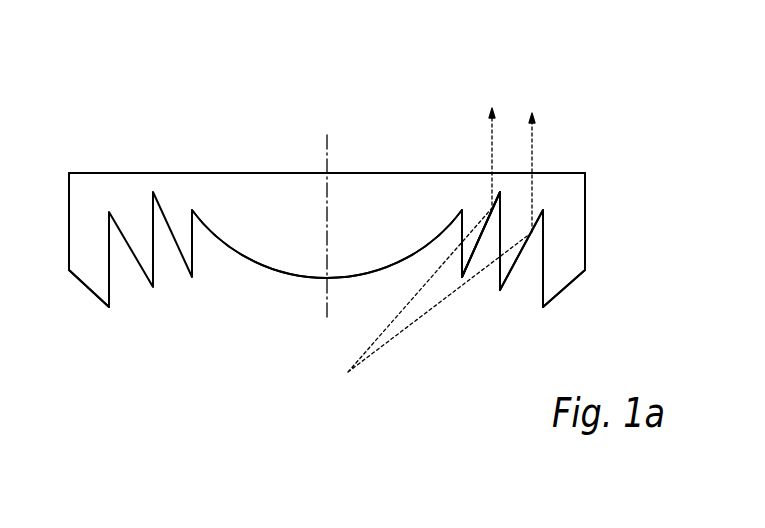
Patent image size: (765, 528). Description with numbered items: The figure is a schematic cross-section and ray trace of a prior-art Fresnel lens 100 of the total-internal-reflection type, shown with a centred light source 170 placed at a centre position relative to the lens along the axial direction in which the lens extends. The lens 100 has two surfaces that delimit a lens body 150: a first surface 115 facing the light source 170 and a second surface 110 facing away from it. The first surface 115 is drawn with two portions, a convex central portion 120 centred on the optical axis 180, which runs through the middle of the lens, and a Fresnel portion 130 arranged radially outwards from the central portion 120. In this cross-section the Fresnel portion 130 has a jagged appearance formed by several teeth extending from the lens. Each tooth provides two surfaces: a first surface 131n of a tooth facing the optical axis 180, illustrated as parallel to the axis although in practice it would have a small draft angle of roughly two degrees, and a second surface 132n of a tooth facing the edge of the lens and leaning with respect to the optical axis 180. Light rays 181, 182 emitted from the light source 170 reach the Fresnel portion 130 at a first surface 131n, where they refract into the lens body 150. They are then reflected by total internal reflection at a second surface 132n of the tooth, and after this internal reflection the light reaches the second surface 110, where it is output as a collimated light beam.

The Fresnel lens 100 is at (130, 92).
The second surface 110 is at (137, 172).
The first surface 115 is at (92, 292).
The central portion 120 is at (315, 282).
The Fresnel portion 130 is at (487, 280).
The first surface of a tooth 131n is at (475, 277).
The second surface of a tooth 132n is at (475, 277).
The lens body 150 is at (568, 173).
The light source 170 is at (348, 372).
The optical axis 180 is at (328, 155).
The light ray 181 is at (533, 130).
The light ray 182 is at (493, 125).